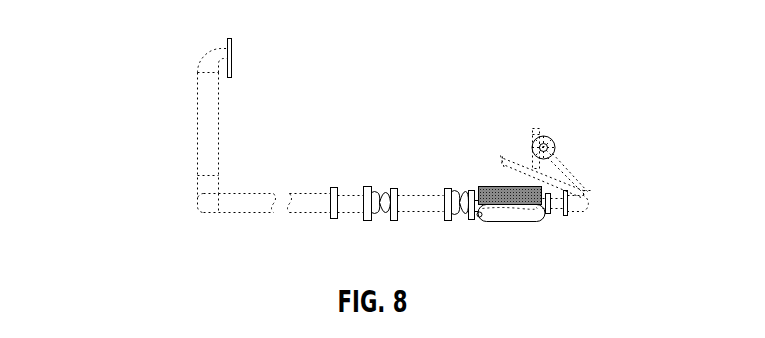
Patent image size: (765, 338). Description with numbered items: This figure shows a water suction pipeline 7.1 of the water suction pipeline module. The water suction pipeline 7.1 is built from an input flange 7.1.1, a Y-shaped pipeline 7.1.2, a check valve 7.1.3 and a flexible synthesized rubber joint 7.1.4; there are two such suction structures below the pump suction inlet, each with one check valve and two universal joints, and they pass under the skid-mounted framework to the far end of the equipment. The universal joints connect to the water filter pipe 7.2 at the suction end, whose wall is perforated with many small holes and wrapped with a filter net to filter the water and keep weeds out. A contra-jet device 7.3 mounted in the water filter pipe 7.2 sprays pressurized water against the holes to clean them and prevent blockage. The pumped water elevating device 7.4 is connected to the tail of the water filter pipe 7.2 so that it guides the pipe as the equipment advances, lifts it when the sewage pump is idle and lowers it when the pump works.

The water suction pipeline 7.1 is at (269, 129).
The input flange 7.1.1 is at (175, 40).
The Y-shaped pipeline 7.1.2 is at (167, 139).
The check valve 7.1.3 is at (236, 172).
The flexible synthesized rubber joint 7.1.4 is at (302, 217).
The water filter pipe 7.2 is at (579, 224).
The contra-jet device 7.3 is at (585, 186).
The pumped water elevating device 7.4 is at (601, 145).